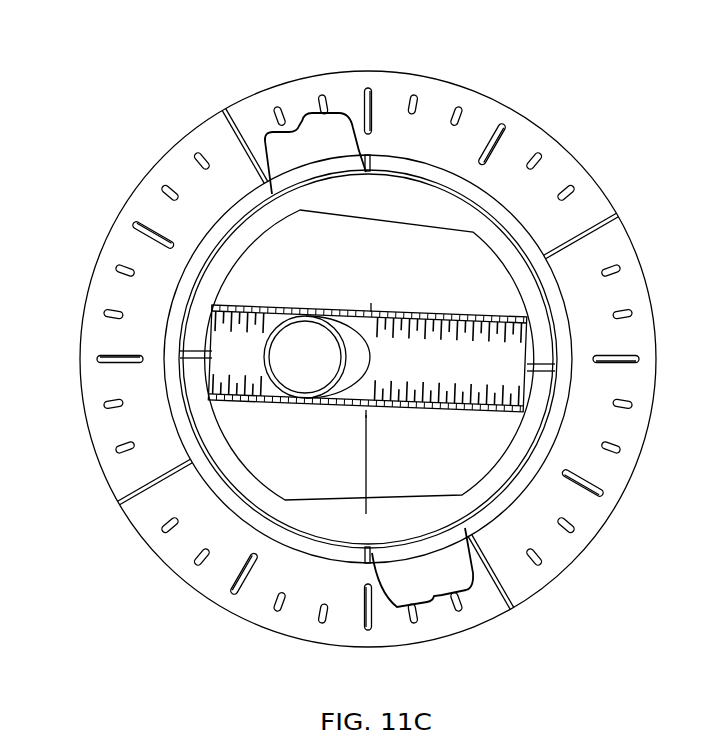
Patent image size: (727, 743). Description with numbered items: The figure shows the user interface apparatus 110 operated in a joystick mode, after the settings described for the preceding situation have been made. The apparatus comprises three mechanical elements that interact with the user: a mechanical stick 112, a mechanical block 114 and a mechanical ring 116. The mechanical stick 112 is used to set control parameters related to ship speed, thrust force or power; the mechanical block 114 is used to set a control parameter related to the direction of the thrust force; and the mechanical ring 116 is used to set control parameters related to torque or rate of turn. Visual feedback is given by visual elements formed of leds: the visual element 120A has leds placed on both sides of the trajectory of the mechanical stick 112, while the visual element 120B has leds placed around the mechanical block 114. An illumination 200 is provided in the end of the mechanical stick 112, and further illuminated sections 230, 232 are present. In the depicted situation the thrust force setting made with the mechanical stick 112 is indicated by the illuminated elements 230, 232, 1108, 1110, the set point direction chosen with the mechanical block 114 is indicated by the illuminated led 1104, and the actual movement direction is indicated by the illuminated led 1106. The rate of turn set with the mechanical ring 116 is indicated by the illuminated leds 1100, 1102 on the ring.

The user interface apparatus 110 is at (128, 118).
The illuminated led 1100 is at (300, 124).
The visual element 120B is at (394, 177).
The illuminated led 1108 is at (330, 299).
The visual element 120A is at (445, 312).
The illuminated section 232 is at (206, 351).
The illuminated led 1104 is at (180, 351).
The mechanical ring 116 is at (80, 368).
The illuminated led 1106 is at (186, 411).
The illumination 200 is at (321, 369).
The mechanical stick 112 is at (275, 398).
The illuminated led 1110 is at (325, 417).
The illuminated section 230 is at (536, 370).
The mechanical block 114 is at (375, 489).
The illuminated led 1102 is at (434, 597).